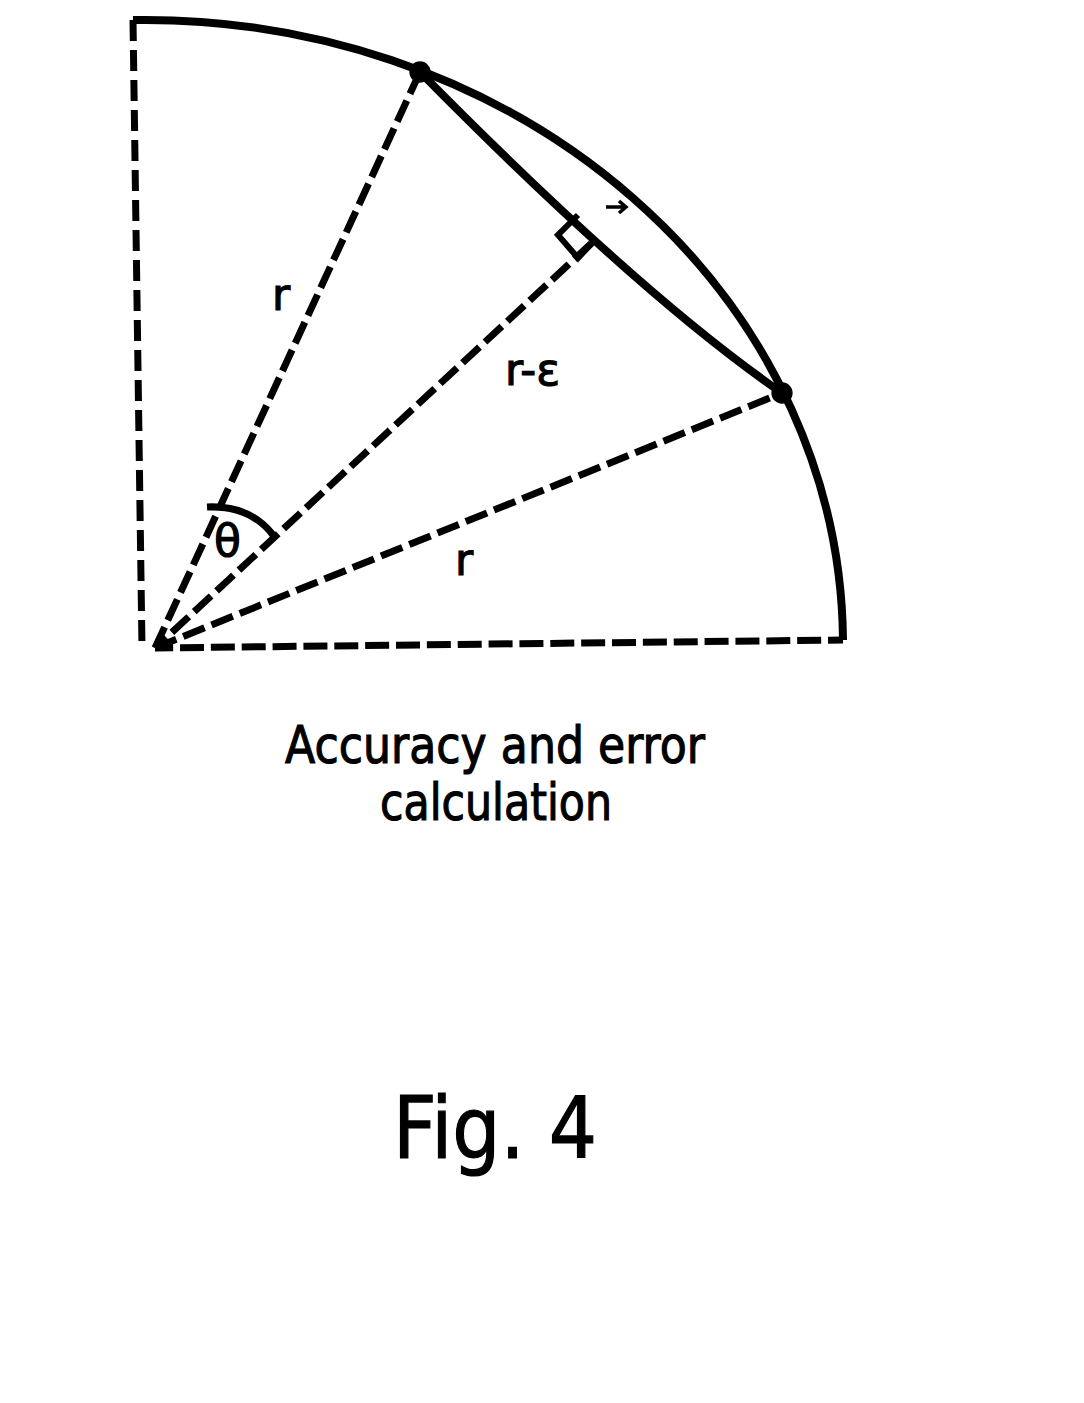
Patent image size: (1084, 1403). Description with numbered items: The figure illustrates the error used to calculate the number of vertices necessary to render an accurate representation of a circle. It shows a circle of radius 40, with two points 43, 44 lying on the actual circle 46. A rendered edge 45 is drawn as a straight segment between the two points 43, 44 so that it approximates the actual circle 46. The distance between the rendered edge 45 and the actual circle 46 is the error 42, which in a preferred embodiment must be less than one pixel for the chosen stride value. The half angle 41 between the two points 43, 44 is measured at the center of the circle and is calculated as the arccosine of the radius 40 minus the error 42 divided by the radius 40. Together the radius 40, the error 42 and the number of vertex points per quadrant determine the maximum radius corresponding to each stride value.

The radius 40 is at (486, 520).
The half angle 41 is at (248, 514).
The error 42 is at (630, 208).
The point on the circle 43 is at (432, 74).
The point on the circle 44 is at (792, 393).
The rendered edge 45 is at (688, 322).
The actual circle 46 is at (792, 312).